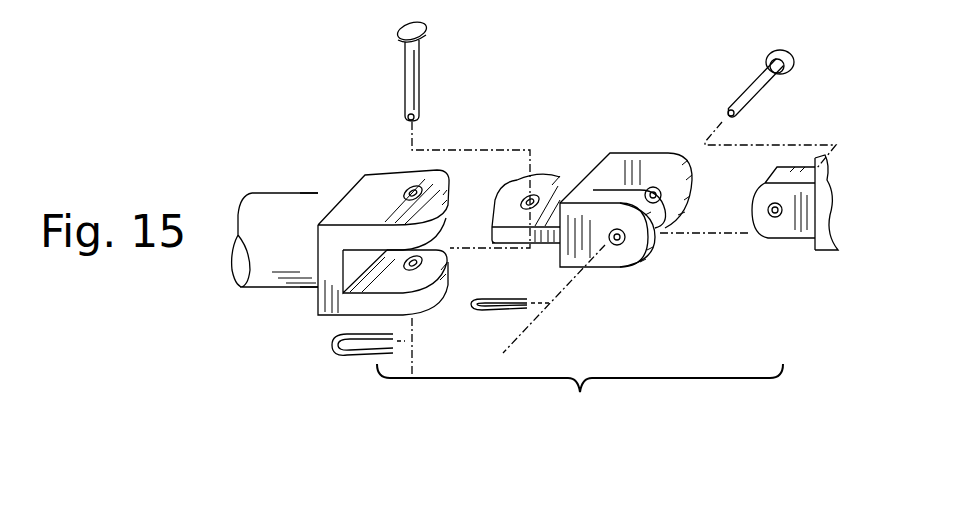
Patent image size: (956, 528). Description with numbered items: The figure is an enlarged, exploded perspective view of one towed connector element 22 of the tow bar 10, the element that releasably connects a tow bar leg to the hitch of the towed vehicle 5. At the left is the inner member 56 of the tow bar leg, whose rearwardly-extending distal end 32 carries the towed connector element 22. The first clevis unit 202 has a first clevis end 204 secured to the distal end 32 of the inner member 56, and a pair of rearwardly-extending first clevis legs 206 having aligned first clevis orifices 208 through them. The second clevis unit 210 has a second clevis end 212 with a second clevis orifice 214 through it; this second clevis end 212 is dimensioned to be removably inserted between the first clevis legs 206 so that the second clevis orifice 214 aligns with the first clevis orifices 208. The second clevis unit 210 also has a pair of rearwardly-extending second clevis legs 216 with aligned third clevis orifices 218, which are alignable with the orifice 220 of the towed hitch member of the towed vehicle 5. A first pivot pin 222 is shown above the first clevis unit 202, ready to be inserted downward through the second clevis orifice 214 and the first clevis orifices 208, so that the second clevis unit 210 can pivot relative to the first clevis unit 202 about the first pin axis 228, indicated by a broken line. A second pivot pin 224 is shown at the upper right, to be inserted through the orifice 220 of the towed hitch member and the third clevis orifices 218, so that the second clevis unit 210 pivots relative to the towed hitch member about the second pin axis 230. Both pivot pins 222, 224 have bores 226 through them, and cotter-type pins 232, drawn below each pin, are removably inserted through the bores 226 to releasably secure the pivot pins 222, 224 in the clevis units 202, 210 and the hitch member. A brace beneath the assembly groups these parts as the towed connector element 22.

The tow bar 10 is at (300, 127).
The inner member 56 is at (270, 192).
The distal end 32 is at (340, 190).
The first clevis end 204 is at (374, 236).
The first clevis unit 202 is at (326, 311).
The first clevis orifices 208 is at (418, 252).
The first pivot pin 222 is at (404, 68).
The bores 226 is at (404, 114).
The first clevis legs 206 is at (467, 140).
The first pin axis 228 is at (412, 328).
The second clevis end 212 is at (528, 191).
The second clevis orifice 214 is at (543, 197).
The second clevis unit 210 is at (629, 195).
The third clevis orifices 218 is at (653, 205).
The second pin axis 230 is at (522, 335).
The second pivot pin 224 is at (756, 76).
The second clevis legs 216 is at (759, 213).
The orifice of the towed hitch member 220 is at (777, 220).
The towed vehicle 5 is at (824, 222).
The cotter-type pins 232 is at (332, 348).
The towed connector element 22 is at (425, 393).